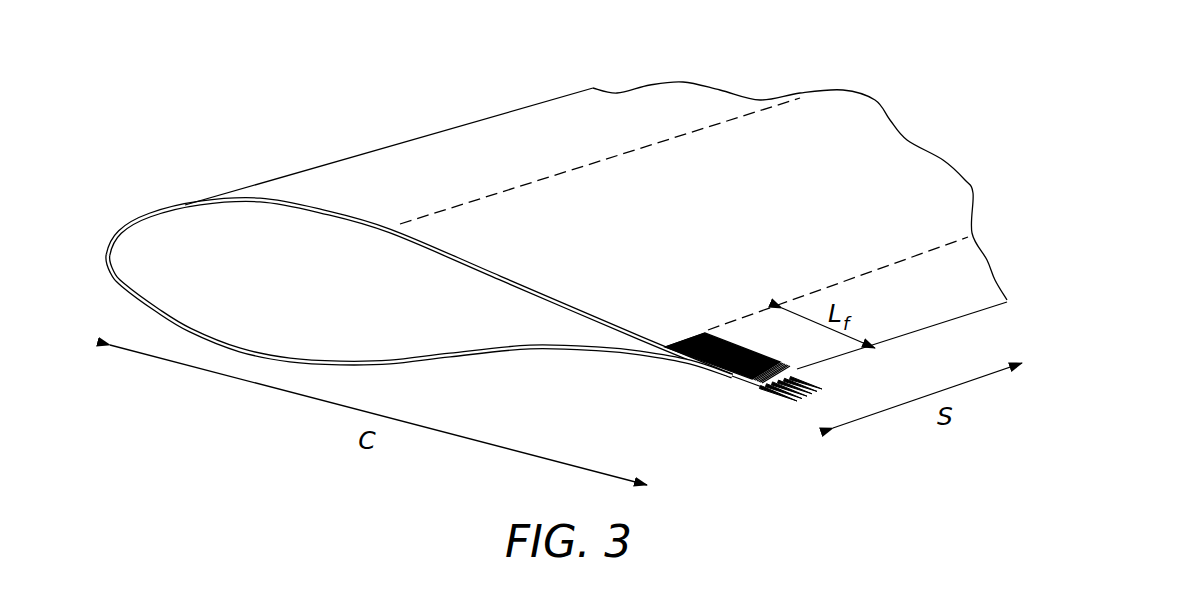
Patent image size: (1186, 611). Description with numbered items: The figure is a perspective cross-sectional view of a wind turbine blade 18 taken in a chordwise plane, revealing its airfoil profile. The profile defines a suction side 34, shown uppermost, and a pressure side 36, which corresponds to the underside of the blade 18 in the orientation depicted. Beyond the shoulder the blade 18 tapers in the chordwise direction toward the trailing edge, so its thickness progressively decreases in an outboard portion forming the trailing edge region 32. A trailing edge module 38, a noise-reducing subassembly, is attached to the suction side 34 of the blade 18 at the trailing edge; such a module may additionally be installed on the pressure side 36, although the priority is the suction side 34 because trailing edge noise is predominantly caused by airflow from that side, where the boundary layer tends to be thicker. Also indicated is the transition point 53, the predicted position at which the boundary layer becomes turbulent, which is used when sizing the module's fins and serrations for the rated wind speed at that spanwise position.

The blade 18 is at (462, 97).
The trailing edge region 32 is at (968, 305).
The suction side 34 is at (370, 168).
The pressure side 36 is at (543, 350).
The trailing edge module 38 is at (728, 378).
The transition point 53 is at (515, 187).